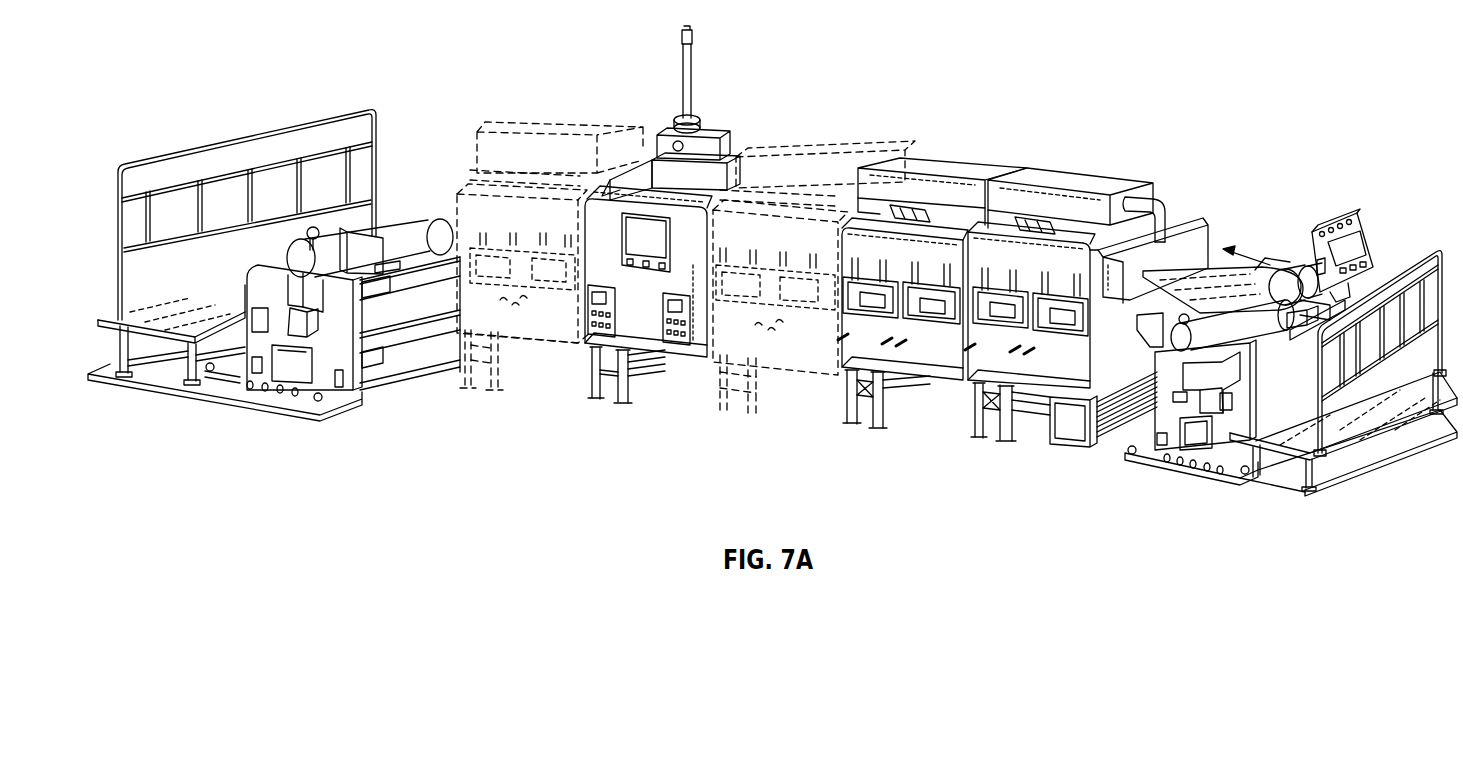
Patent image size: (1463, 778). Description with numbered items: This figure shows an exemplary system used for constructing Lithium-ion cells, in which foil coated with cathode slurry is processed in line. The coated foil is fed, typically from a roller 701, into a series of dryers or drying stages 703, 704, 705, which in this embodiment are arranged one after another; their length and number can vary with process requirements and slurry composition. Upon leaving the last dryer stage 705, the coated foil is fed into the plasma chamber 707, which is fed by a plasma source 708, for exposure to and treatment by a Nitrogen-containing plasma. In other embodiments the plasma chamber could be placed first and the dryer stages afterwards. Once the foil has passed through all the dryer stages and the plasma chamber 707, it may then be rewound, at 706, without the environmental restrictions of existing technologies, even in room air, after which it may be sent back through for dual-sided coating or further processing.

The roller 701 is at (1357, 196).
The drying stage 703 is at (1087, 174).
The drying stage 704 is at (965, 163).
The drying stage 705 is at (833, 152).
The rewinding 706 is at (254, 122).
The plasma chamber 707 is at (640, 203).
The plasma source 708 is at (693, 66).